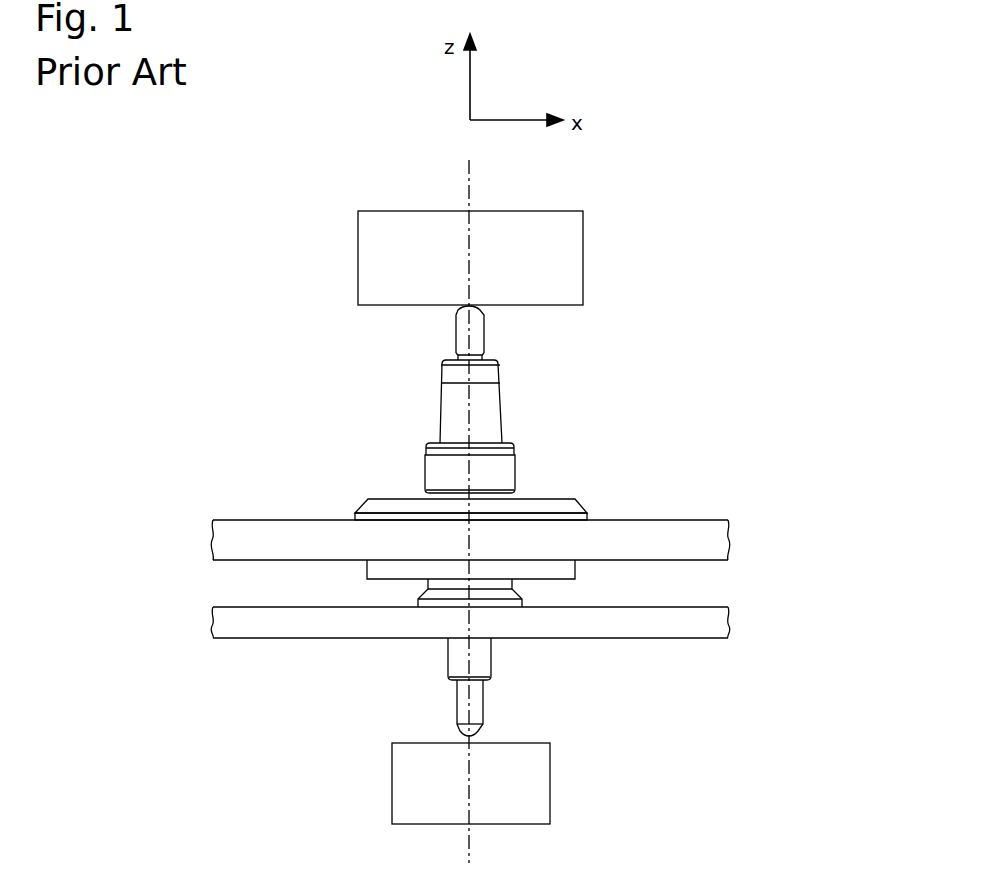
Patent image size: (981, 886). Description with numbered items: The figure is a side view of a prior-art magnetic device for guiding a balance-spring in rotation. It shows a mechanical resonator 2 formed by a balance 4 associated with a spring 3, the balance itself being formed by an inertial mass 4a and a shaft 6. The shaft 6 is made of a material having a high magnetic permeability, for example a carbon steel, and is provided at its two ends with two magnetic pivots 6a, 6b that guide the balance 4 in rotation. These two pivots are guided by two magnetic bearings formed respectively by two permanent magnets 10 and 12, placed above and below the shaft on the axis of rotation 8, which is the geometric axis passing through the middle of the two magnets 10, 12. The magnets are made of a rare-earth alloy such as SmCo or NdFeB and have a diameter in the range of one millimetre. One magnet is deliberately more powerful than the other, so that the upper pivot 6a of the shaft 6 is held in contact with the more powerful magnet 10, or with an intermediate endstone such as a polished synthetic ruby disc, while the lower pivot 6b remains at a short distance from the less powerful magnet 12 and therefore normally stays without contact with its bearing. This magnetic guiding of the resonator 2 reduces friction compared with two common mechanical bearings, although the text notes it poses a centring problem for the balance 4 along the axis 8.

The mechanical resonator 2 is at (270, 434).
The spring 3 is at (280, 625).
The balance 4 is at (538, 472).
The inertial mass 4a is at (240, 535).
The shaft 6 is at (455, 400).
The magnetic pivot 6a is at (459, 330).
The magnetic pivot 6b is at (463, 716).
The axis of rotation 8 is at (470, 185).
The permanent magnet 10 is at (553, 270).
The permanent magnet 12 is at (406, 789).